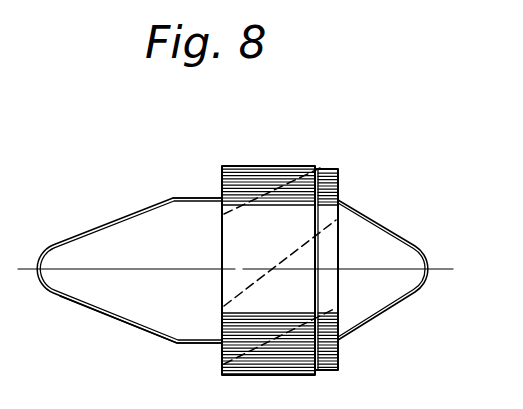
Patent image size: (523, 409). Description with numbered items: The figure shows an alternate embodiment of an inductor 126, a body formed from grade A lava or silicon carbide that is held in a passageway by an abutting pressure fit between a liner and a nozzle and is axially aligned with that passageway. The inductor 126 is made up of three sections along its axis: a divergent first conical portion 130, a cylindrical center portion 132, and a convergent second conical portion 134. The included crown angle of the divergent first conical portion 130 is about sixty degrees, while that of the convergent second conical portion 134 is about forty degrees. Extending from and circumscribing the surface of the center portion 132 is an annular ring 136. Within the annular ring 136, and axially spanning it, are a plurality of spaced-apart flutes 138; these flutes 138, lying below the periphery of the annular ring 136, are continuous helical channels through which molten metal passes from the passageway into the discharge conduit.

The inductor 126 is at (188, 287).
The divergent first conical portion 130 is at (365, 238).
The cylindrical center portion 132 is at (197, 345).
The convergent second conical portion 134 is at (123, 302).
The annular ring 136 is at (222, 240).
The flutes 138 is at (280, 186).